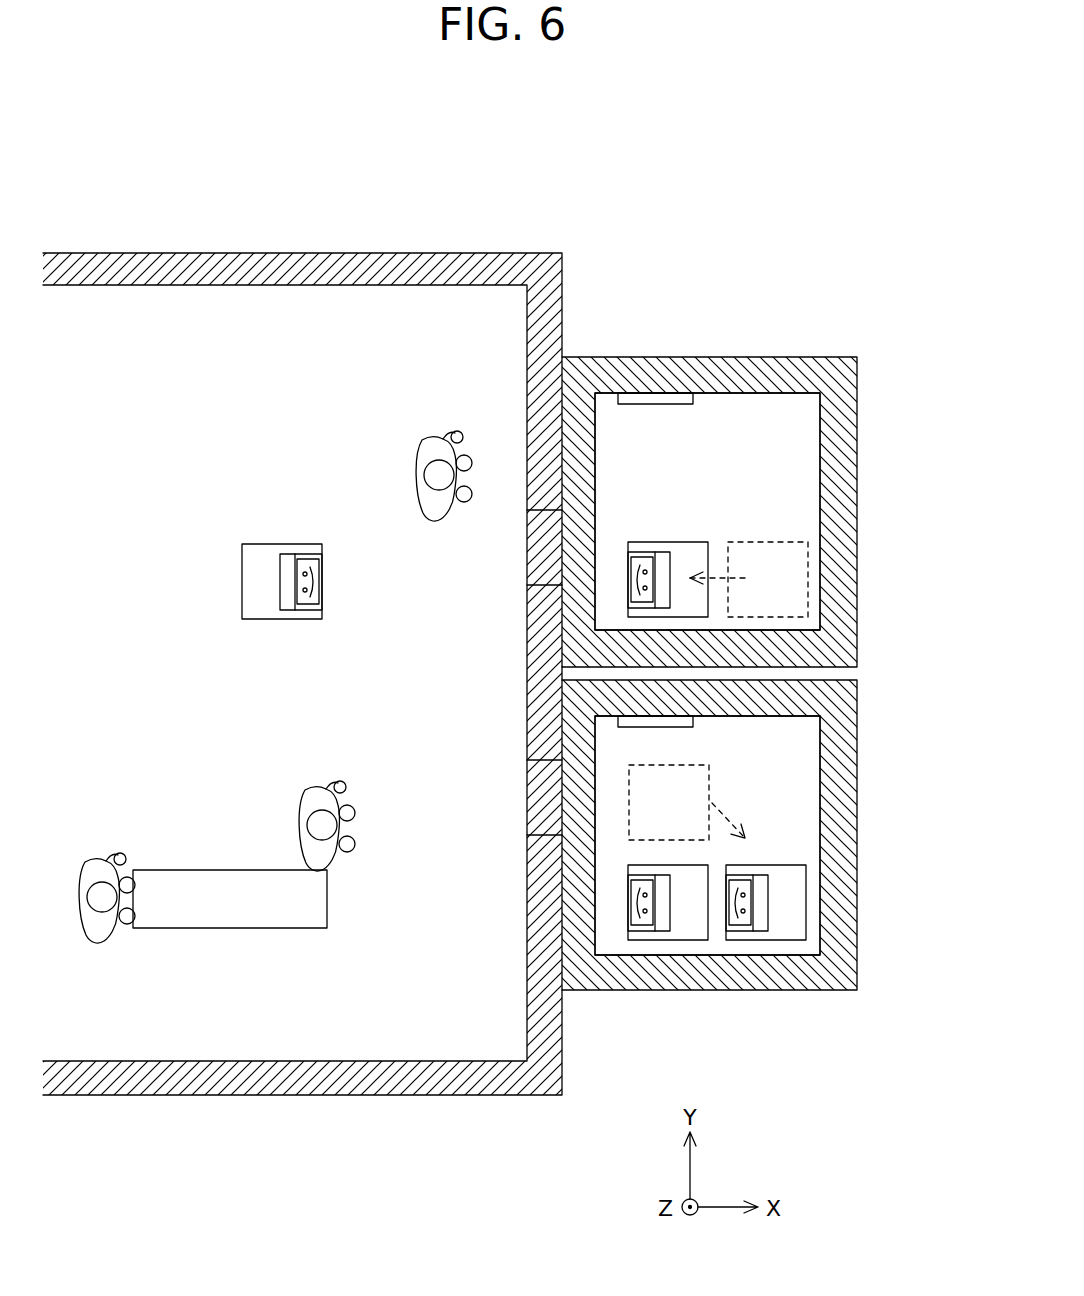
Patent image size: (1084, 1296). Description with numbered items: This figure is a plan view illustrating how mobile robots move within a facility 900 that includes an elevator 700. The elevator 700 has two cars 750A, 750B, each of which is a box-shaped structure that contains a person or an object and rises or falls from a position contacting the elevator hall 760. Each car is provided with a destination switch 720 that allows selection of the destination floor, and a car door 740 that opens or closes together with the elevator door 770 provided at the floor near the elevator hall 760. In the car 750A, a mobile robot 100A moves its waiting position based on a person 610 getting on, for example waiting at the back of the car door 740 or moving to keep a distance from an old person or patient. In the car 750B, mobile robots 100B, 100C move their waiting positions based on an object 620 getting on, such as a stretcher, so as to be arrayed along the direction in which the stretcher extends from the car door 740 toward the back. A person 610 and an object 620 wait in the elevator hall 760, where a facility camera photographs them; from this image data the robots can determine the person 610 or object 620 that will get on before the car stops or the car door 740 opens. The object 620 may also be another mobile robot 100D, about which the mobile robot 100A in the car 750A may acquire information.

The facility 900 is at (393, 185).
The elevator hall 760 is at (103, 330).
The elevator 700 is at (736, 265).
The car 750A is at (612, 415).
The car 750B is at (612, 925).
The destination switch 720 is at (685, 404).
The car door 740 is at (607, 509).
The elevator door 770 is at (500, 534).
The mobile robot 100A is at (690, 552).
The mobile robot 100B is at (700, 866).
The mobile robot 100C is at (790, 900).
The mobile robot 100D is at (265, 588).
The person 610 is at (396, 485).
The object 620 is at (285, 918).